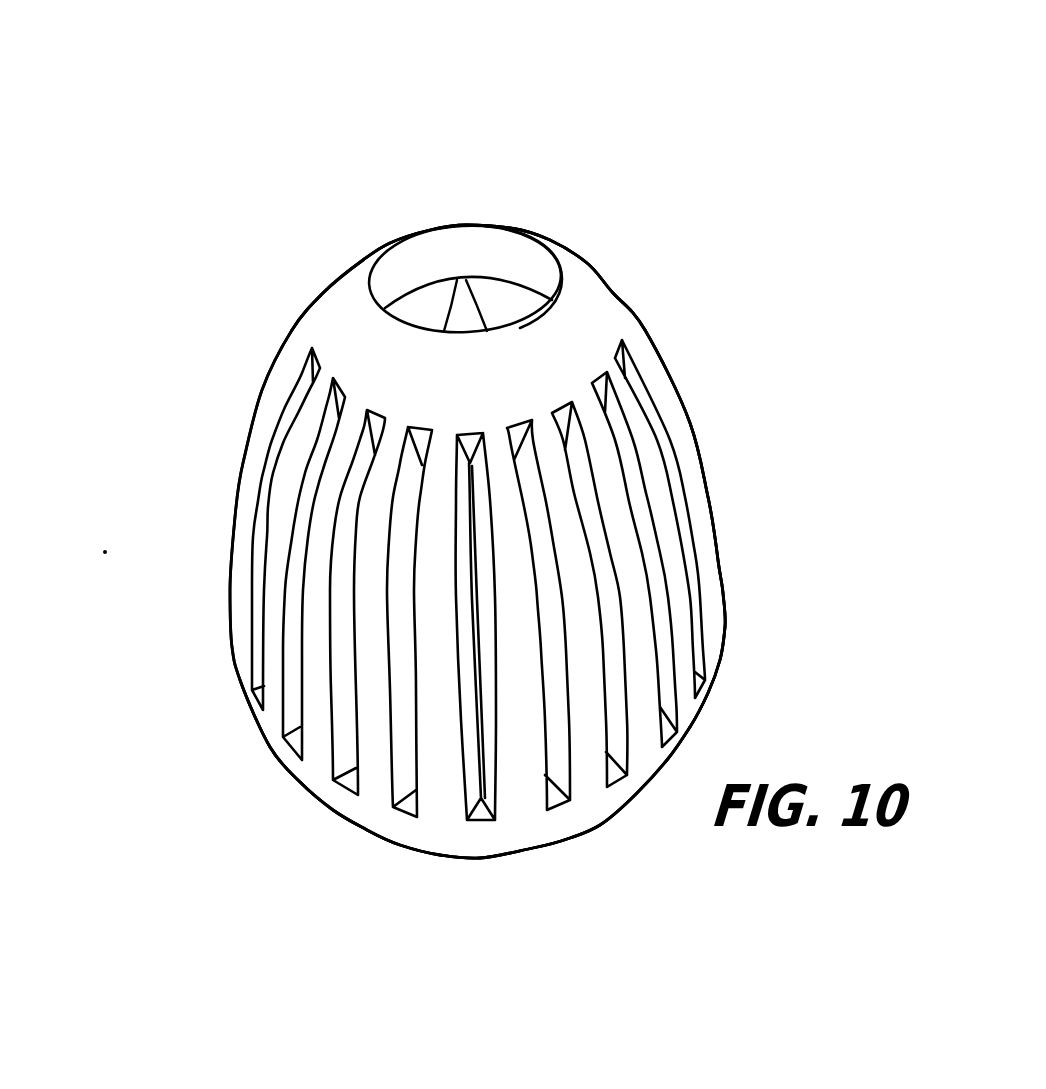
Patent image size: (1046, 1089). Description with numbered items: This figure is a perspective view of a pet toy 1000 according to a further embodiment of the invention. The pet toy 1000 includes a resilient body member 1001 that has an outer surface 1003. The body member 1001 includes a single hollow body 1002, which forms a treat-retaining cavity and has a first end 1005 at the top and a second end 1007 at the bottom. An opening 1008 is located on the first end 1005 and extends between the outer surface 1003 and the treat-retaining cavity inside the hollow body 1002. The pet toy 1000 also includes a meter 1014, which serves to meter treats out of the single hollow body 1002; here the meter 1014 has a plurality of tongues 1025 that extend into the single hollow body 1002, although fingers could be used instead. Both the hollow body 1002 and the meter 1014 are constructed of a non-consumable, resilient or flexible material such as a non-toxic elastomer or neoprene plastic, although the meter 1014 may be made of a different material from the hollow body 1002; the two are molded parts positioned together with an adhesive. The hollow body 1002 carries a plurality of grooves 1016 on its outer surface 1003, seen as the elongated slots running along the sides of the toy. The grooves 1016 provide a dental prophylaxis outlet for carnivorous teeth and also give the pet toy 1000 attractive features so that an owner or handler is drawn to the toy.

The pet toy 1000 is at (682, 163).
The resilient body member 1001 is at (654, 302).
The single hollow body 1002 is at (690, 423).
The outer surface 1003 is at (353, 338).
The first end 1005 is at (572, 293).
The second end 1007 is at (562, 846).
The opening 1008 is at (373, 300).
The meter 1014 is at (417, 275).
The grooves 1016 is at (298, 665).
The tongues 1025 is at (508, 305).